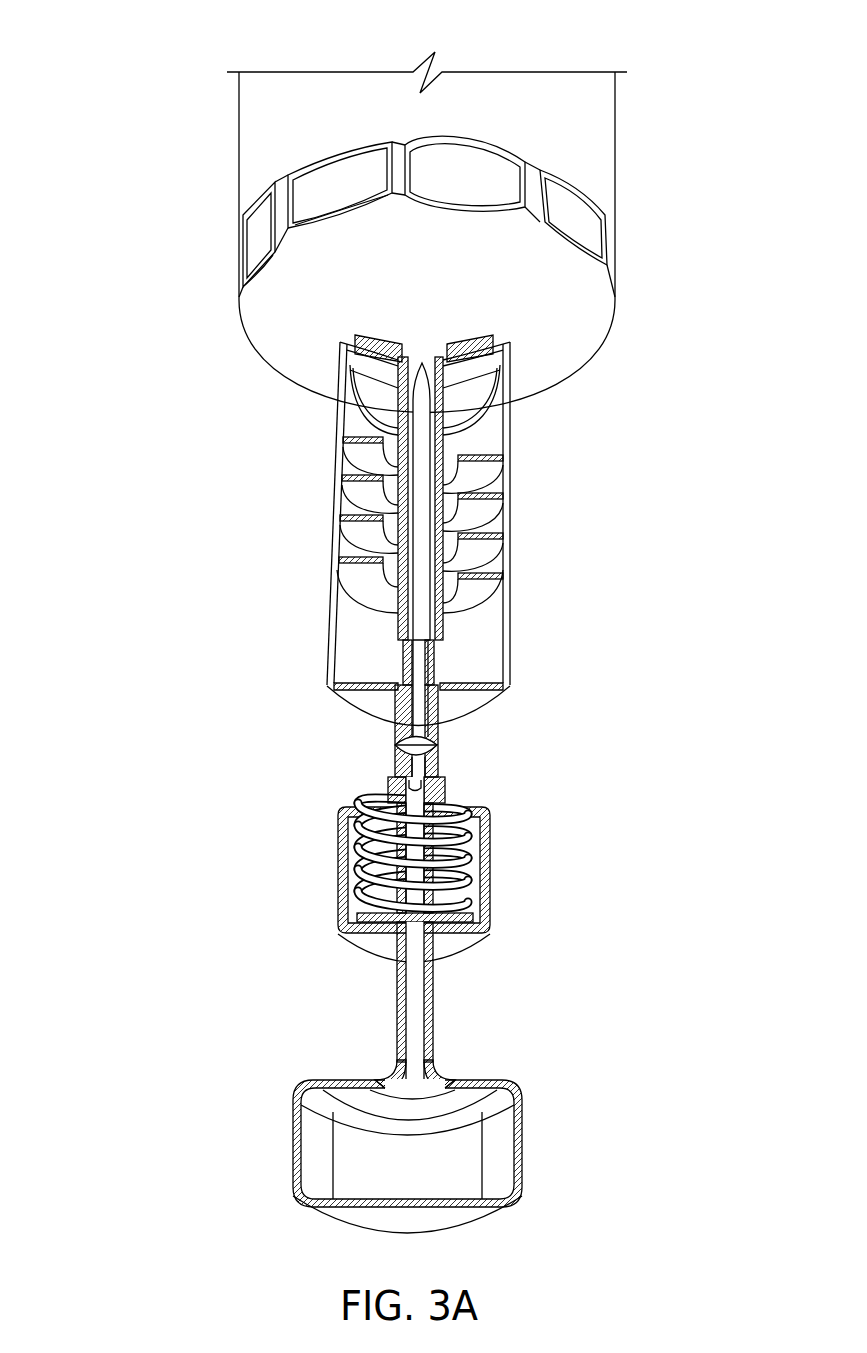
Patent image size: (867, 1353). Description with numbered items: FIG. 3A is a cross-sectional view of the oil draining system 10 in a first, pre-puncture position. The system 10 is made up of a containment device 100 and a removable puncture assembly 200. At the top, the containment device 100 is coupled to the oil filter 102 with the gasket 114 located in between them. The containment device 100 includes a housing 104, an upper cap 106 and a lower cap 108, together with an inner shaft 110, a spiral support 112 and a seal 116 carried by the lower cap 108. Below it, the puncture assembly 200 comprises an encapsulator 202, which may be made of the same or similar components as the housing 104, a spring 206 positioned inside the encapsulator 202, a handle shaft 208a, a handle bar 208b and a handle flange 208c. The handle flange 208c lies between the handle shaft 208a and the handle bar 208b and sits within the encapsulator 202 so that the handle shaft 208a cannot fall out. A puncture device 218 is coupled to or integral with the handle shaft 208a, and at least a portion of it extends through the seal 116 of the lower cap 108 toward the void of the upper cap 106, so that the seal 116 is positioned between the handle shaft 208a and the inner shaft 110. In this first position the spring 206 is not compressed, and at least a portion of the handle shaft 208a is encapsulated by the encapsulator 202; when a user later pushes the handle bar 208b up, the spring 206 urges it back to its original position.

The oil draining system 10 is at (134, 48).
The containment device 100 is at (190, 343).
The oil filter 102 is at (615, 310).
The housing 104 is at (316, 493).
The upper cap 106 is at (375, 405).
The lower cap 108 is at (477, 702).
The inner shaft 110 is at (432, 728).
The spiral support 112 is at (357, 447).
The gasket 114 is at (505, 337).
The seal 116 is at (395, 743).
The puncture assembly 200 is at (190, 795).
The encapsulator 202 is at (336, 845).
The spring 206 is at (453, 827).
The handle shaft 208a is at (408, 1000).
The handle bar 208b is at (314, 1110).
The handle flange 208c is at (338, 914).
The puncture device 218 is at (423, 422).